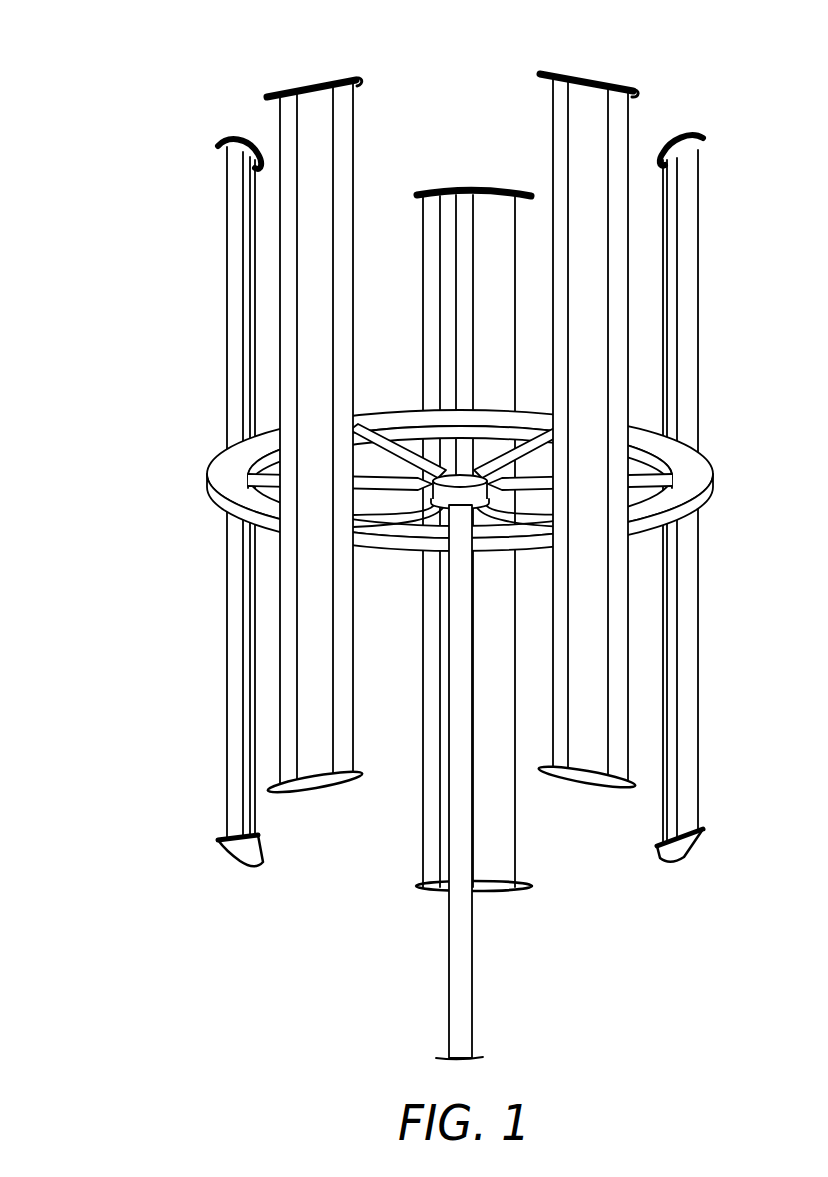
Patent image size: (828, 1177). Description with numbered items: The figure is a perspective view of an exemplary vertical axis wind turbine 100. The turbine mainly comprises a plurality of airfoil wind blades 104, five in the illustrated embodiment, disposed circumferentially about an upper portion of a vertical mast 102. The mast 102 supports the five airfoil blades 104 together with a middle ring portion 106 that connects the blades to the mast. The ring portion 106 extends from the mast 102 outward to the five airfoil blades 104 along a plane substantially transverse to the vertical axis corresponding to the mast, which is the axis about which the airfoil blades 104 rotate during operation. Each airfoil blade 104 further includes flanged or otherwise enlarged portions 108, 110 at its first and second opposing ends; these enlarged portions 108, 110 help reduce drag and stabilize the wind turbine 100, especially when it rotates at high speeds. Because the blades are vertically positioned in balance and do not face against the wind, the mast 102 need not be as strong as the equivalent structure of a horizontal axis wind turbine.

The vertical axis wind turbine 100 is at (102, 82).
The mast 102 is at (458, 963).
The airfoil wind blades 104 is at (235, 803).
The ring portion 106 is at (218, 493).
The flanged or enlarged portion 108 is at (222, 145).
The flanged or enlarged portion 110 is at (244, 856).